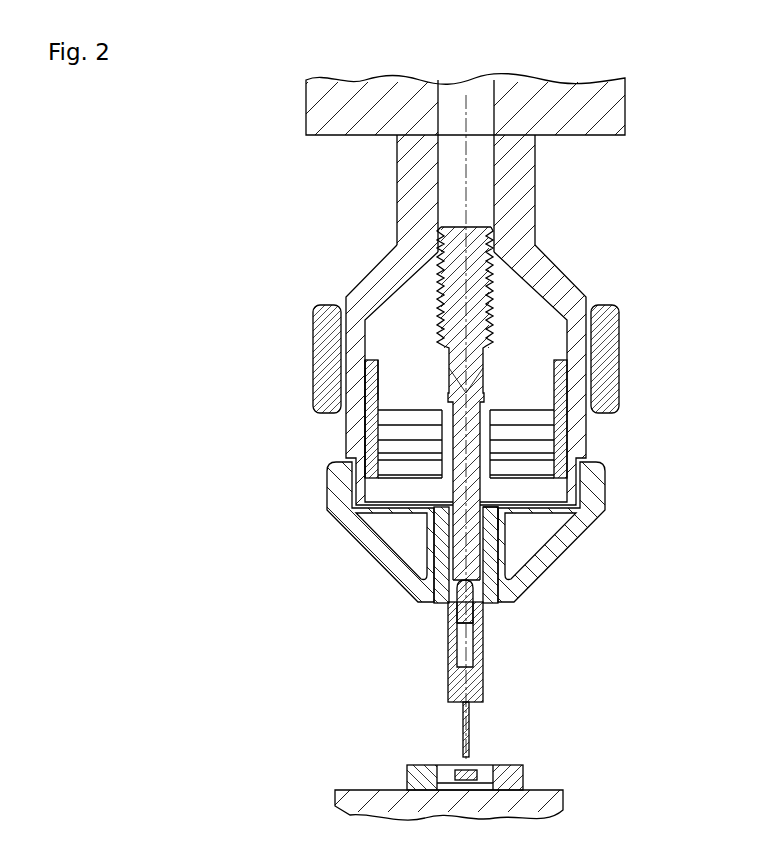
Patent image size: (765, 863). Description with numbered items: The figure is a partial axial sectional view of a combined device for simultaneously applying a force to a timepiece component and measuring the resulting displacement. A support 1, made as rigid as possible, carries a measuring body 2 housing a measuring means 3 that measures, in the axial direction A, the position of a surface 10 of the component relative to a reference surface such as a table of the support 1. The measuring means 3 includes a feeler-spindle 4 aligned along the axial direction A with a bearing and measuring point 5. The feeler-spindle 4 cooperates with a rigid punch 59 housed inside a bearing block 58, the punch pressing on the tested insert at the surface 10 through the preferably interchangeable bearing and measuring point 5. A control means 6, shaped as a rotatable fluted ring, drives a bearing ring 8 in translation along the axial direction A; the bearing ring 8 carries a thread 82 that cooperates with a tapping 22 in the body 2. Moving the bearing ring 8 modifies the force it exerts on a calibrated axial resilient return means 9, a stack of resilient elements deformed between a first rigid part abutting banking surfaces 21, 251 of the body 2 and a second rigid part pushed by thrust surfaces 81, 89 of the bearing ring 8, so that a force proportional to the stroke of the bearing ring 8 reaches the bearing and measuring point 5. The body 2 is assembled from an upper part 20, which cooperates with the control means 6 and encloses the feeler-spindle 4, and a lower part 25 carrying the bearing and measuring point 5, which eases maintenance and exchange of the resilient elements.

The support 1 is at (337, 90).
The measuring body 2 is at (355, 478).
The measuring means 3 is at (476, 131).
The feeler-spindle 4 is at (453, 145).
The bearing and measuring point 5 is at (455, 688).
The control means 6 is at (619, 305).
The bearing ring 8 is at (350, 381).
The thread 82 is at (363, 382).
The axial resilient return means 9 is at (594, 450).
The surface 10 is at (490, 759).
The upper part 20 is at (517, 173).
The banking surface 21 is at (368, 467).
The tapping 22 is at (376, 361).
The lower part 25 is at (557, 558).
The banking surface 251 is at (429, 499).
The bearing block 58 is at (492, 520).
The rigid punch 59 is at (472, 558).
The thrust surface 81 is at (563, 413).
The thrust surface 89 is at (368, 416).
The axial direction A is at (459, 617).